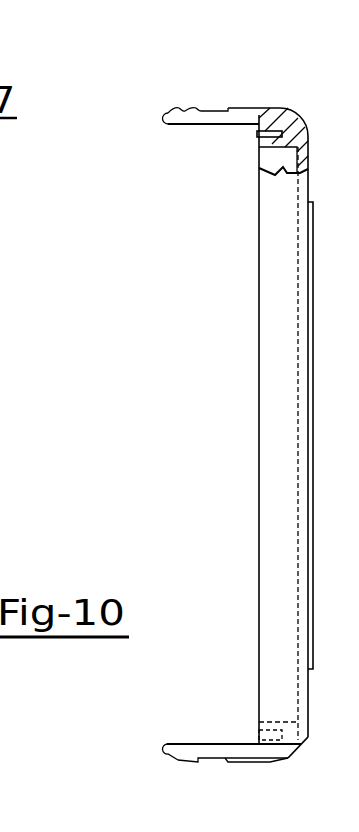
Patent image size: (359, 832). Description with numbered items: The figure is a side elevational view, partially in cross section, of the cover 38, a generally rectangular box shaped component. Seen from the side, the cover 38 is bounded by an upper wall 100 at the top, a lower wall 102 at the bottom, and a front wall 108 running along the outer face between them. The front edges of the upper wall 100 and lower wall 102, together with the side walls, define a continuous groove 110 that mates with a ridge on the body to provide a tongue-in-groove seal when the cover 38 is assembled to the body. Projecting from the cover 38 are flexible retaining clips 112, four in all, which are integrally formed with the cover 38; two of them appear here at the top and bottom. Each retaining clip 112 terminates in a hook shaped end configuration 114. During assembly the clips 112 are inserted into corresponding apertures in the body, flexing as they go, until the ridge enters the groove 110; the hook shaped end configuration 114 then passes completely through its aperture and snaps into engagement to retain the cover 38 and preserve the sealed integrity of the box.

The cover 38 is at (210, 390).
The upper wall 100 is at (289, 118).
The lower wall 102 is at (287, 744).
The front wall 108 is at (301, 194).
The continuous groove 110 is at (270, 133).
The flexible retaining clip 112 is at (218, 118).
The hook shaped end configuration 114 is at (176, 109).